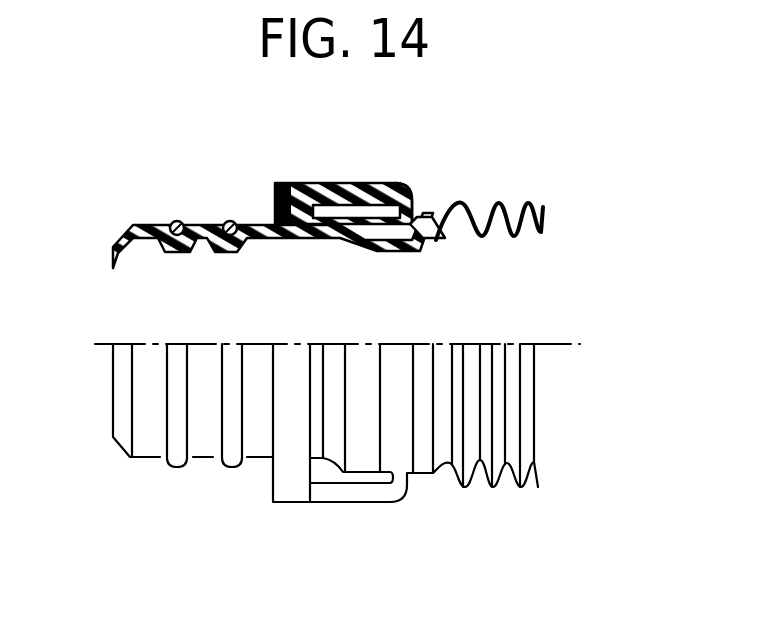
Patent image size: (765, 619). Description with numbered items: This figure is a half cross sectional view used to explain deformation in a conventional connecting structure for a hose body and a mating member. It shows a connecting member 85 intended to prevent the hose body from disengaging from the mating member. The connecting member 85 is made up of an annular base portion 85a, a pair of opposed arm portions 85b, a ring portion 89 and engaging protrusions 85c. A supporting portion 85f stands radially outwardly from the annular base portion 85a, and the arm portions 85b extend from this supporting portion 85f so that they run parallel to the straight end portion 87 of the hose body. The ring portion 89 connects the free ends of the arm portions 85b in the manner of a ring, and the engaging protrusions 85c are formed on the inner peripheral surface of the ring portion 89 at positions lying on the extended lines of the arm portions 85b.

The connecting member 85 is at (354, 502).
The annular base portion 85a is at (410, 208).
The arm portions 85b is at (362, 185).
The engaging protrusions 85c is at (290, 185).
The supporting portion 85f is at (400, 200).
The straight end portion 87 is at (291, 240).
The ring portion 89 is at (288, 444).